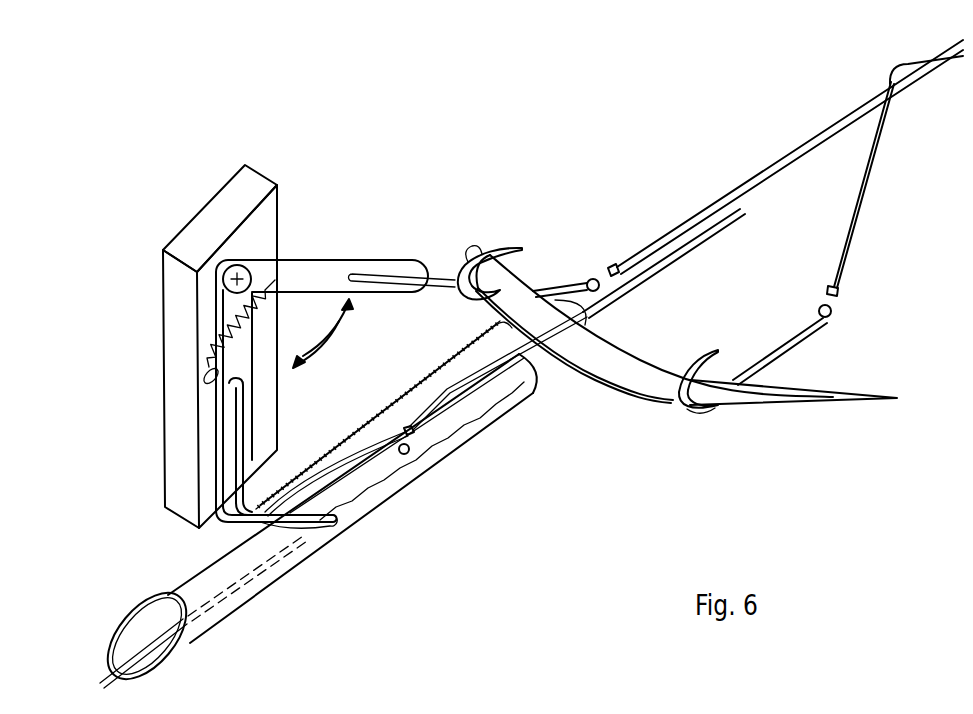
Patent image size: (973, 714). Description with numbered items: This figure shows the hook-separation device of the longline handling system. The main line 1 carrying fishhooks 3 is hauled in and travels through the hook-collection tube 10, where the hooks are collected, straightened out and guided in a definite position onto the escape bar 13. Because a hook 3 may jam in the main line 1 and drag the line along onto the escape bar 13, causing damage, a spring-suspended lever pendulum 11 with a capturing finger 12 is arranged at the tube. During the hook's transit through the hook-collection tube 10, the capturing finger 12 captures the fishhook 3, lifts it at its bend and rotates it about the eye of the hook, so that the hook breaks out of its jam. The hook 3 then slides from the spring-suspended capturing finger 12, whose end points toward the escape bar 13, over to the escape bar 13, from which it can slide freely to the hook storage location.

The main line 1 is at (447, 415).
The fishhook 3 is at (413, 455).
The hook-collection tube 10 is at (547, 360).
The lever pendulum 11 is at (320, 273).
The capturing finger 12 is at (425, 268).
The escape bar 13 is at (763, 398).